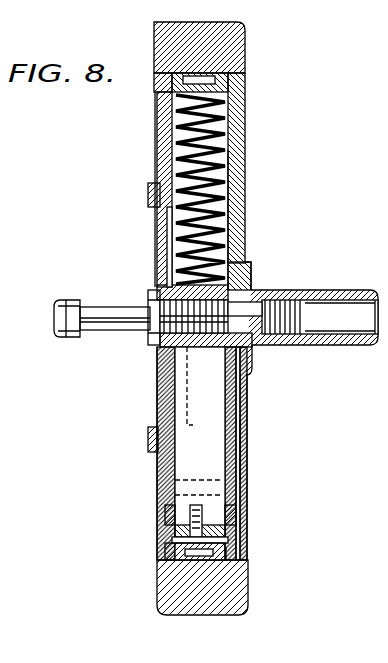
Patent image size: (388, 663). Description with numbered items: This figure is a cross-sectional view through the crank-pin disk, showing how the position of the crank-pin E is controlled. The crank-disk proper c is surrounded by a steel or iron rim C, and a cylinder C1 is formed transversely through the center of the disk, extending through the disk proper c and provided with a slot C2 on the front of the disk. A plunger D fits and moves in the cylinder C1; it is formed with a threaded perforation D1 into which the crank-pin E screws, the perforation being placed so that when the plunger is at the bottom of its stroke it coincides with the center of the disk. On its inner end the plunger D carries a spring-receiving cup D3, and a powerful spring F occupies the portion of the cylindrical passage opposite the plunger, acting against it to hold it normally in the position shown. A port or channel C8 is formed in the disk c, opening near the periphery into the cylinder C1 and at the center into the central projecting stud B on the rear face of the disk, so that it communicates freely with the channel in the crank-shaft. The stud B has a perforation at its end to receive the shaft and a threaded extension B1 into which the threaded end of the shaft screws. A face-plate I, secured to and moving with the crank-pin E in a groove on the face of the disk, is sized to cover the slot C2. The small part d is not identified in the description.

The rim C is at (238, 580).
The crank-disk proper c is at (238, 205).
The spring F is at (158, 126).
The spring-receiving cup D3 is at (236, 238).
The slot C2 is at (167, 240).
The crank-pin E is at (100, 318).
The central projecting stud B is at (302, 346).
The threaded extension B1 is at (262, 346).
The threaded perforation D1 is at (158, 356).
The plunger D is at (160, 397).
The cylinder C1 is at (248, 423).
The port or channel C8 is at (246, 470).
The face-plate I is at (158, 460).
The bottom fitting d is at (165, 528).